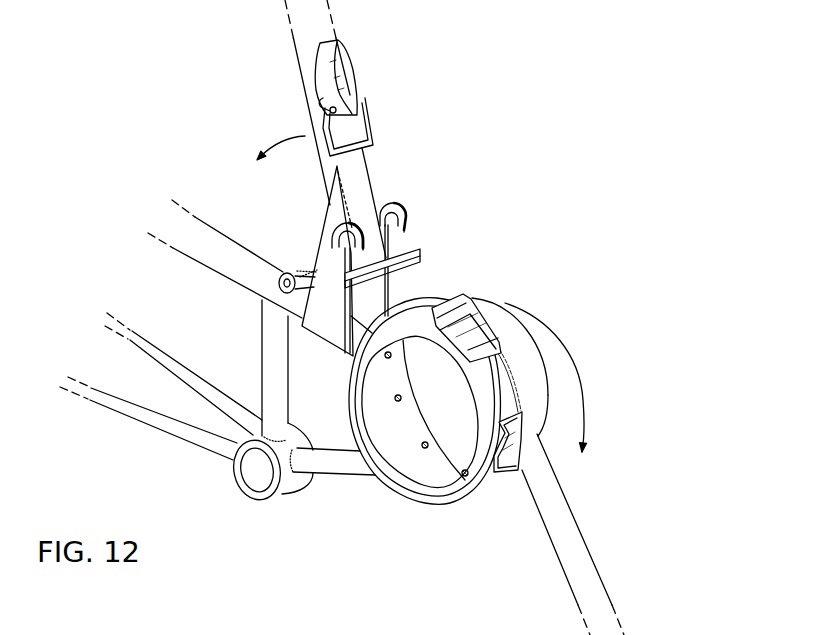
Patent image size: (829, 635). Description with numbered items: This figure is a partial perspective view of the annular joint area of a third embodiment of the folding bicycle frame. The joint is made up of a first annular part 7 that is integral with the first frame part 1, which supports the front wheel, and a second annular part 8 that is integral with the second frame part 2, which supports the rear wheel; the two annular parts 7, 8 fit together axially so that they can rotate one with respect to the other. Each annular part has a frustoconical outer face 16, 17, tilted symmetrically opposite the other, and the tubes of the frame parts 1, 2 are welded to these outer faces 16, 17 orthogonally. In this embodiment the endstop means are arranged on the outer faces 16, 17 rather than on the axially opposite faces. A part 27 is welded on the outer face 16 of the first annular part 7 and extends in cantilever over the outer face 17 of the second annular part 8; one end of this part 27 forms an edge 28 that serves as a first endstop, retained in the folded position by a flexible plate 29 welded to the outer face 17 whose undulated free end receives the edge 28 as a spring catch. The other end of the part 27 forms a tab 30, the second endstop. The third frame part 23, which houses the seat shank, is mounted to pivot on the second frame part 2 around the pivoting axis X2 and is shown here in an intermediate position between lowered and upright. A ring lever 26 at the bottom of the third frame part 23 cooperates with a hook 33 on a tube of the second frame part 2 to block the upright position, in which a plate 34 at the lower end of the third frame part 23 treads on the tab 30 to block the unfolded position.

The first frame part 1 is at (593, 543).
The second frame part 2 is at (217, 228).
The first annular part 7 is at (502, 356).
The second annular part 8 is at (495, 490).
The outer face 16 is at (515, 373).
The outer face 17 is at (497, 402).
The third frame part 23 is at (300, 58).
The ring lever 26 is at (343, 82).
The part 27 is at (470, 327).
The edge 28 is at (530, 345).
The flexible plate 29 is at (528, 430).
The tab 30 is at (447, 298).
The hook 33 is at (400, 200).
The plate 34 is at (418, 248).
The pivoting axis X2 is at (279, 286).